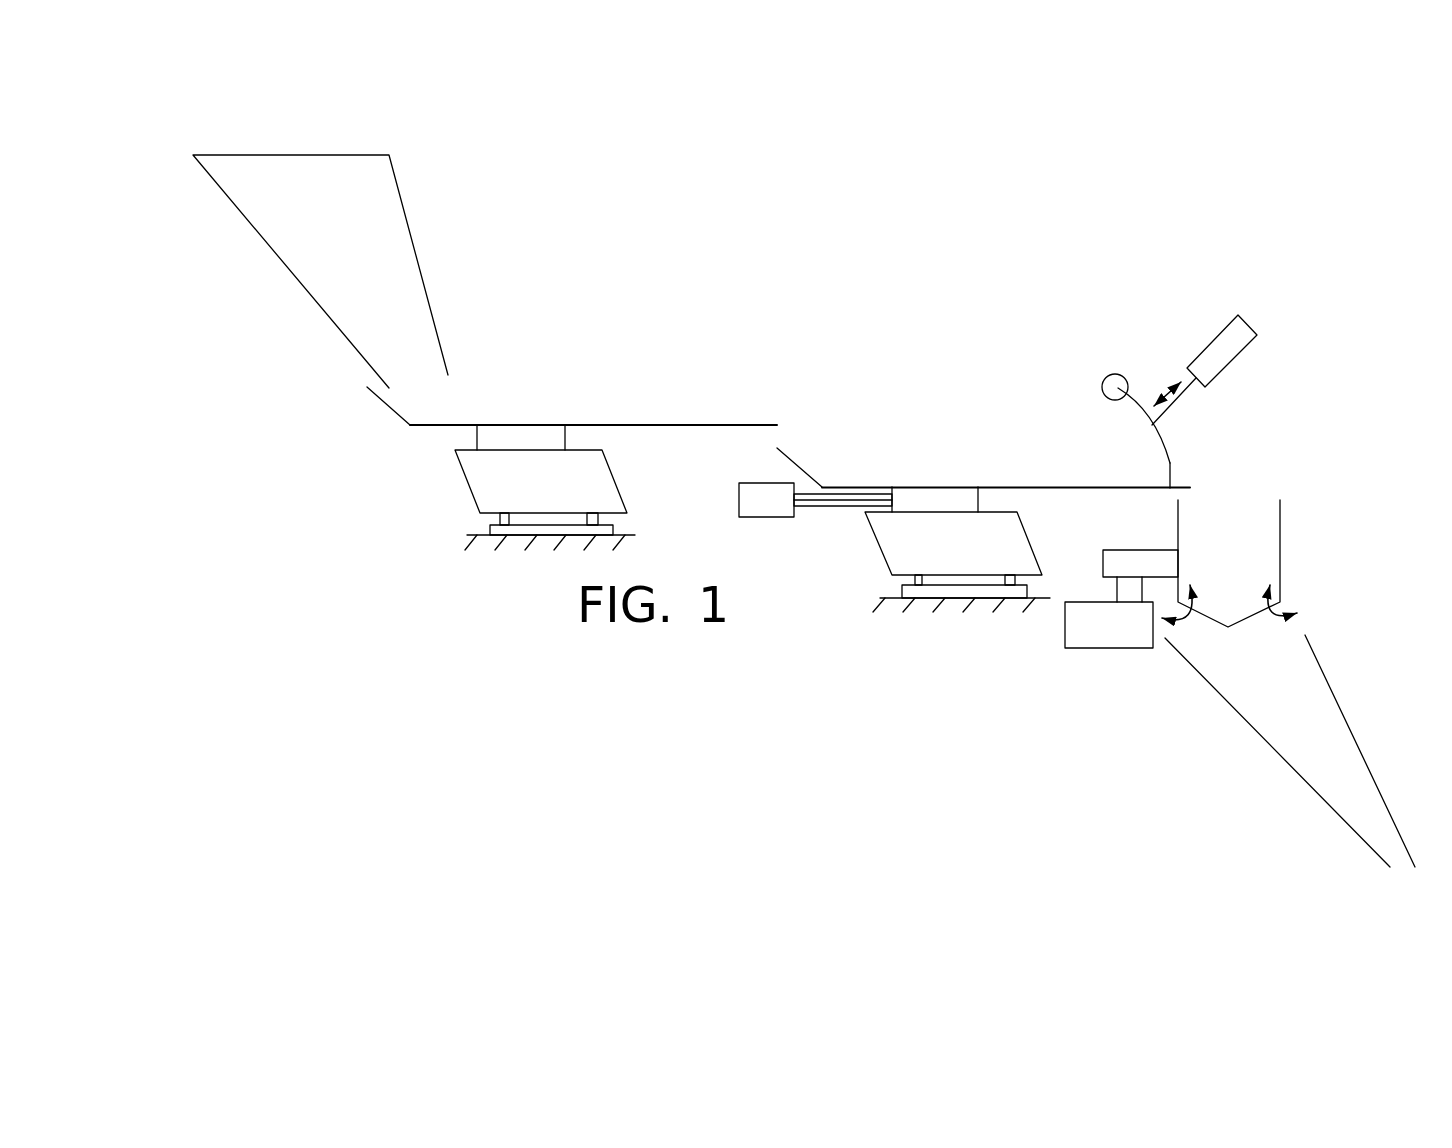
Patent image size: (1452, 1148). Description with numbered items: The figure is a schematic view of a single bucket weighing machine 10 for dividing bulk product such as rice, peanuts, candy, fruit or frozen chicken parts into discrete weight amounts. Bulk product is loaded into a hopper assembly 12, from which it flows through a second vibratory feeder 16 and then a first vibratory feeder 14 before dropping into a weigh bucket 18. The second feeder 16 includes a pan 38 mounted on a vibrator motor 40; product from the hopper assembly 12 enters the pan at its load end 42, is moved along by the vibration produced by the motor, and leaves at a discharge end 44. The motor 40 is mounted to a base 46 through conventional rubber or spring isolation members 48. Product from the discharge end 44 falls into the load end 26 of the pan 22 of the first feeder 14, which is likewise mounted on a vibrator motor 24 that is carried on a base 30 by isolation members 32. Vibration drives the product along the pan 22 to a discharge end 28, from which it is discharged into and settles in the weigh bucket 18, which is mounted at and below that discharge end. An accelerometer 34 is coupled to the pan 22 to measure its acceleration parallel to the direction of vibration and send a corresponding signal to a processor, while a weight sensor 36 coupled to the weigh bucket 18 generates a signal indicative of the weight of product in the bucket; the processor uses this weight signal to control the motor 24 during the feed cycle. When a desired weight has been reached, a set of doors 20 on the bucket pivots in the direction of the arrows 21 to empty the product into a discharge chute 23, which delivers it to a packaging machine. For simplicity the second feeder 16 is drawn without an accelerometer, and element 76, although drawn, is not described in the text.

The single bucket weighing machine 10 is at (845, 292).
The hopper assembly 12 is at (403, 205).
The first vibratory feeder 14 is at (932, 453).
The second vibratory feeder 16 is at (558, 390).
The weigh bucket 18 is at (1280, 538).
The doors 20 is at (1200, 620).
The arrows 21 is at (1263, 605).
The pan 22 is at (1045, 485).
The discharge chute 23 is at (1323, 675).
The vibrator motor 24 is at (873, 537).
The load end 26 is at (793, 463).
The discharge end 28 is at (1173, 467).
The base 30 is at (893, 598).
The isolation members 32 is at (1003, 580).
The accelerometer 34 is at (738, 505).
The weight sensor 36 is at (1082, 648).
The pan 38 is at (580, 425).
The vibrator motor 40 is at (468, 480).
The load end 42 is at (402, 417).
The discharge end 44 is at (733, 423).
The base 46 is at (485, 533).
The isolation members 48 is at (590, 520).
The sensor 76 is at (1210, 340).